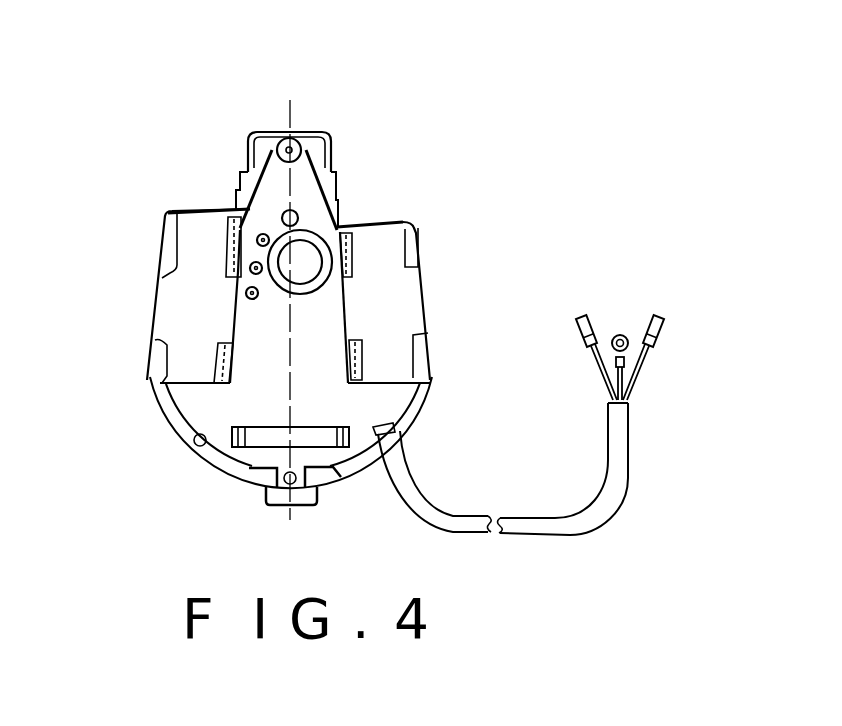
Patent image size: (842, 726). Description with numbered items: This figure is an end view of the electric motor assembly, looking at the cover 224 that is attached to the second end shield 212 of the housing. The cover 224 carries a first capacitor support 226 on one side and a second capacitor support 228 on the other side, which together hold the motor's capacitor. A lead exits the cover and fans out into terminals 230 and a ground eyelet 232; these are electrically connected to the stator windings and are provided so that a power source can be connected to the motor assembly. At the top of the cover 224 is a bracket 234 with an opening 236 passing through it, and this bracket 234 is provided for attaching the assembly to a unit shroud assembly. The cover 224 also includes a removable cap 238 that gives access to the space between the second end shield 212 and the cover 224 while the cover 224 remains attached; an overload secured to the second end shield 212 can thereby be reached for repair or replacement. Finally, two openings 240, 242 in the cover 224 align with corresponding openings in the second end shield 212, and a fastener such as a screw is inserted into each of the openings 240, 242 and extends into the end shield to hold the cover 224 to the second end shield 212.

The second end shield 212 is at (220, 472).
The cover 224 is at (188, 410).
The first capacitor support 226 is at (412, 243).
The second capacitor support 228 is at (167, 258).
The terminals 230 is at (577, 313).
The ground eyelet 232 is at (621, 337).
The bracket 234 is at (215, 178).
The opening 236 is at (273, 137).
The removable cap 238 is at (333, 227).
The opening 240 is at (270, 212).
The opening 242 is at (287, 483).